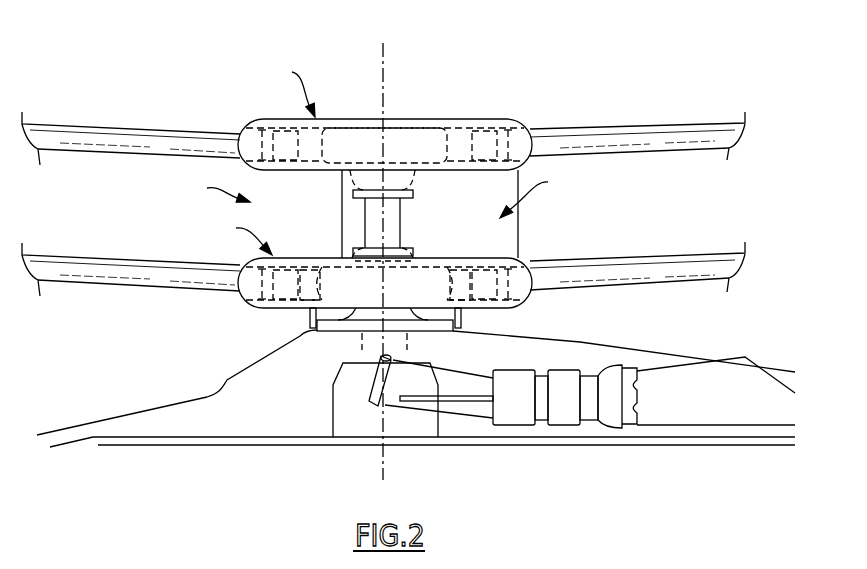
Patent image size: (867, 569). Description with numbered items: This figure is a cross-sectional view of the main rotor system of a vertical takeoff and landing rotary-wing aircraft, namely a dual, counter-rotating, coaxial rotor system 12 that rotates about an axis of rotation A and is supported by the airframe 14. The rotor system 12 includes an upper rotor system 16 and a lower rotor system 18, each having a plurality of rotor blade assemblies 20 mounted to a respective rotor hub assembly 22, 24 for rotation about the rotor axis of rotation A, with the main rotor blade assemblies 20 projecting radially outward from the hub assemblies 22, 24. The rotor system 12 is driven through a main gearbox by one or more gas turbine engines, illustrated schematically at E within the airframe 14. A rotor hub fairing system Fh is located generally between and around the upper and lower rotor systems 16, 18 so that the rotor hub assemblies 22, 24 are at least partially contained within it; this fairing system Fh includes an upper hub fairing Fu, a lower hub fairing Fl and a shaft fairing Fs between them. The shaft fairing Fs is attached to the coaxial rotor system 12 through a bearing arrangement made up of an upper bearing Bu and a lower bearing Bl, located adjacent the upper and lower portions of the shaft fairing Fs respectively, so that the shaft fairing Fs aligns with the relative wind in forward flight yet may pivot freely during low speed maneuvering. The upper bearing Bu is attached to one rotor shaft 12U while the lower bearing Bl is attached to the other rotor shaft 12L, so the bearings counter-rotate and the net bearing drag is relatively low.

The axis of rotation A is at (384, 56).
The rotor hub assembly 22 is at (404, 142).
The upper rotor system 16 is at (552, 113).
The lower rotor system 18 is at (534, 256).
The rotor blade assembly 20 is at (652, 138).
The coaxial rotor system 12 is at (233, 323).
The rotor shaft 12U is at (342, 203).
The rotor shaft 12L is at (338, 258).
The upper bearing Bu is at (420, 193).
The lower bearing Bl is at (418, 257).
The rotor hub assembly 24 is at (410, 298).
The airframe 14 is at (200, 437).
The engine E is at (515, 410).
The upper hub fairing Fu is at (290, 88).
The rotor hub fairing system Fh is at (216, 187).
The lower hub fairing Fl is at (242, 238).
The shaft fairing Fs is at (536, 194).